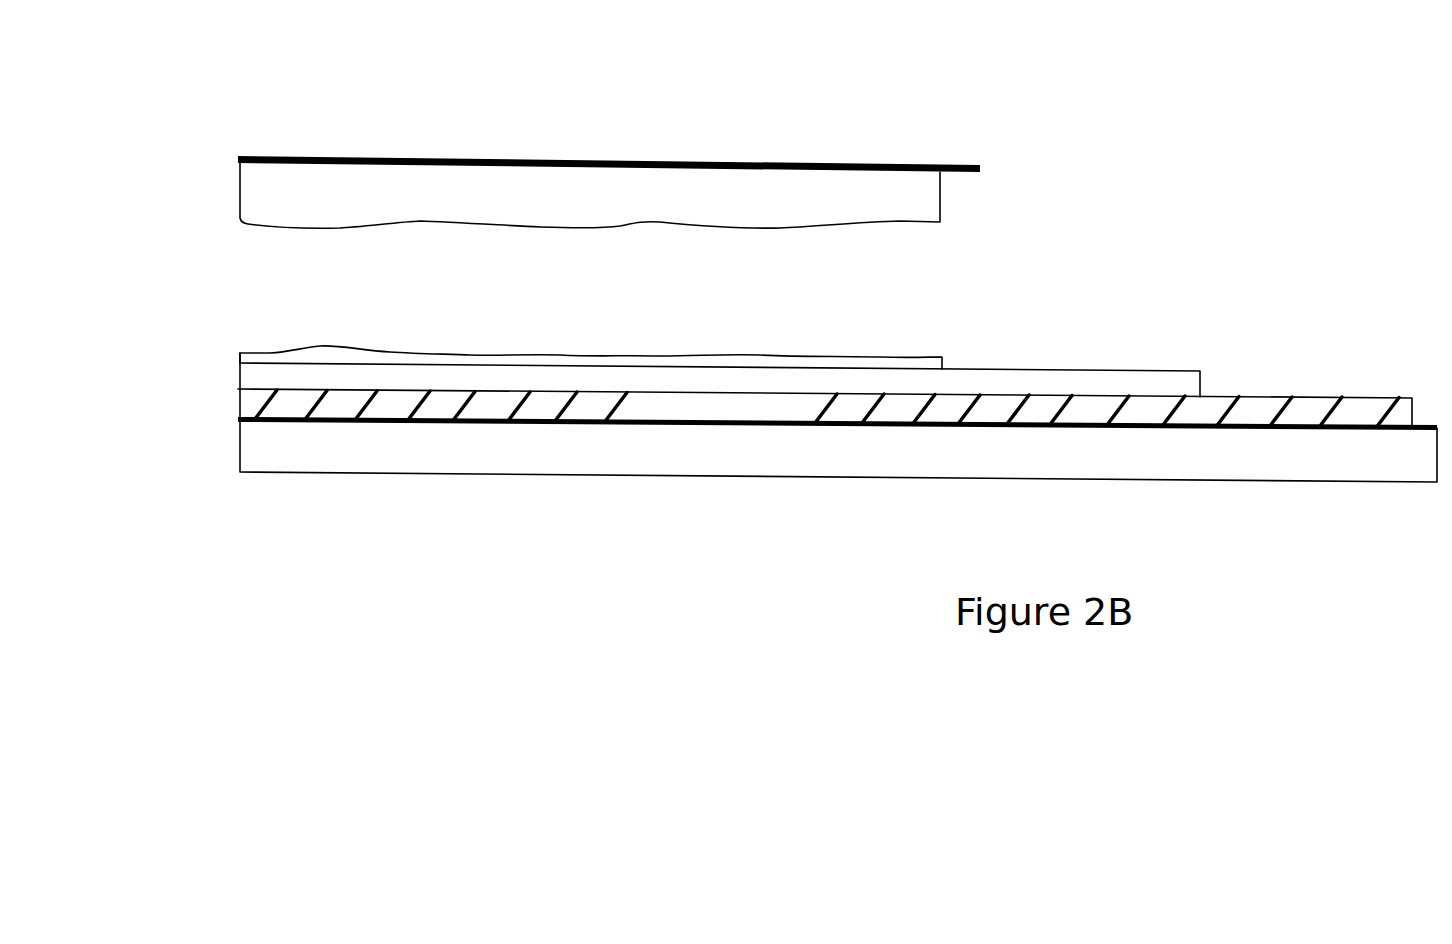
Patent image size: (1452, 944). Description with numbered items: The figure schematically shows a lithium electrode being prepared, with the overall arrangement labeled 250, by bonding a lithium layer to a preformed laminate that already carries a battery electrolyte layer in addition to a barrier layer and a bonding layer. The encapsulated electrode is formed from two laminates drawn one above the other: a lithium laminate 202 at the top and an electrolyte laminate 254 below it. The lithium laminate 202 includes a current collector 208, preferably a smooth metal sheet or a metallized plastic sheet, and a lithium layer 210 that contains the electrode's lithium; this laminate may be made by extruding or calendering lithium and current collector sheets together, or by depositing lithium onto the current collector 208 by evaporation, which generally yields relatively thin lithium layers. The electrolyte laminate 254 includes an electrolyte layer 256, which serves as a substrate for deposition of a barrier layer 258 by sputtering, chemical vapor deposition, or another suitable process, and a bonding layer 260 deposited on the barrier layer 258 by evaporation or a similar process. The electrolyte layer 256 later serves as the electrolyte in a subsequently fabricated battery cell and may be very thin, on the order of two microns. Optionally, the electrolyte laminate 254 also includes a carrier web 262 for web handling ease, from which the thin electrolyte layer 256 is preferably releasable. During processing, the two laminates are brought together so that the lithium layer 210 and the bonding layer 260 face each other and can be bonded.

The electrochemical cell assembly 250 is at (1094, 88).
The lithium laminate 202 is at (228, 195).
The current collector 208 is at (961, 166).
The lithium layer 210 is at (933, 198).
The electrolyte laminate 254 is at (206, 381).
The bonding layer 260 is at (944, 364).
The barrier layer 258 is at (1143, 381).
The electrolyte layer 256 is at (1305, 403).
The carrier web 262 is at (1290, 468).